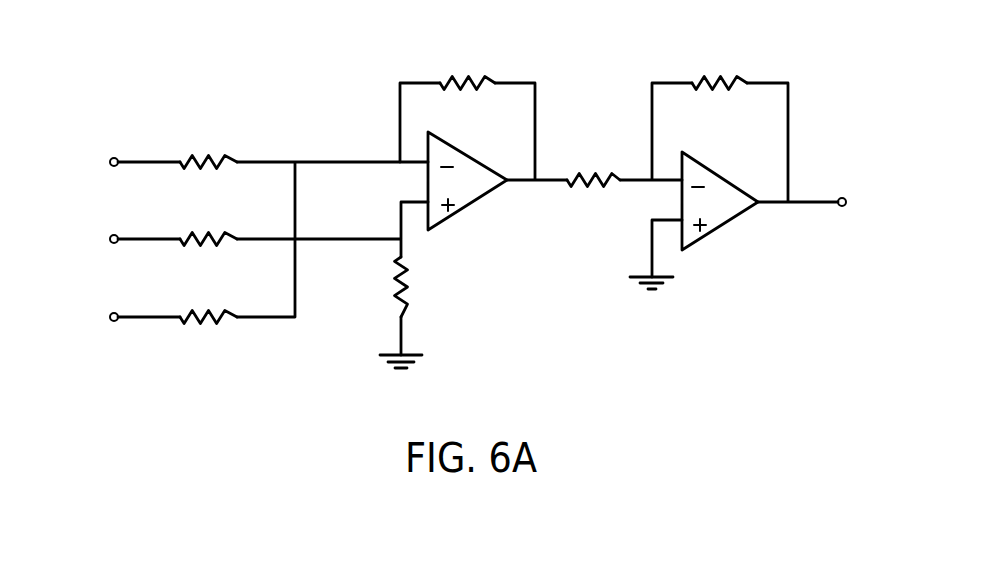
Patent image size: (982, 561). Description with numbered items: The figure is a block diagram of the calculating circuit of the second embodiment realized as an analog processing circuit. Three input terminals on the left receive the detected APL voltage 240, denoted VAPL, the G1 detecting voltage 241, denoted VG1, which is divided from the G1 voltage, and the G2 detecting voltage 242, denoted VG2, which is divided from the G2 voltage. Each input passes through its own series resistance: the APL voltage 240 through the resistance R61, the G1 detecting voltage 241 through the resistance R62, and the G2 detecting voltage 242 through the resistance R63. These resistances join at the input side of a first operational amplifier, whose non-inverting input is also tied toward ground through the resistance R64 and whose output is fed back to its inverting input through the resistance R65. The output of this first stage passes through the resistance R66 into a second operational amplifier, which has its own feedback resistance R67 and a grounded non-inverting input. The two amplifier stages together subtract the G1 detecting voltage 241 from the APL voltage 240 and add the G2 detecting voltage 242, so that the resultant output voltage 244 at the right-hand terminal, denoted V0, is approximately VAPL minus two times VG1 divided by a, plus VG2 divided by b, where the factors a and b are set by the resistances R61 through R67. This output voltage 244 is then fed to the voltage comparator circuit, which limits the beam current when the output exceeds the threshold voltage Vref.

The APL voltage 240 is at (110, 160).
The G1 detecting voltage 241 is at (110, 238).
The G2 detecting voltage 242 is at (110, 316).
The output voltage 244 is at (846, 206).
The resistance R61 is at (213, 145).
The resistance R62 is at (213, 222).
The resistance R63 is at (213, 300).
The resistance R64 is at (426, 287).
The resistance R65 is at (468, 71).
The resistance R66 is at (593, 159).
The resistance R67 is at (720, 72).